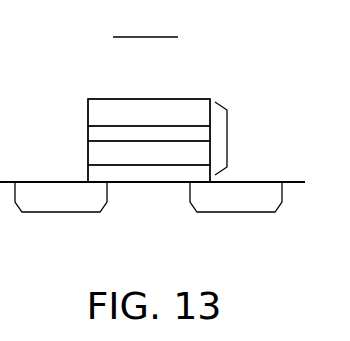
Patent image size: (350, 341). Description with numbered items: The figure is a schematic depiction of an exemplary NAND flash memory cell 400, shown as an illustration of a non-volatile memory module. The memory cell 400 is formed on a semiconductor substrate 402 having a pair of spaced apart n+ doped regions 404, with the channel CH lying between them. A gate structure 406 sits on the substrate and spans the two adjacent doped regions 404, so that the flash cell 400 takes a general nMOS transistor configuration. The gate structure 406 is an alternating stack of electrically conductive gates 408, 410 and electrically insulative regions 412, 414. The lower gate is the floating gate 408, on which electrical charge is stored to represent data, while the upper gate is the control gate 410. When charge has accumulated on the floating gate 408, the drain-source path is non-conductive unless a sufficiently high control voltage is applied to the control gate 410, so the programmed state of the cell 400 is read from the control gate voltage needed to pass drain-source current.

The NAND flash memory cell 400 is at (178, 69).
The semiconductor substrate 402 is at (235, 249).
The n+ doped regions 404 is at (40, 213).
The gate structure 406 is at (227, 139).
The floating gate 408 is at (88, 155).
The control gate 410 is at (88, 112).
The electrically insulative region 412 is at (88, 178).
The inter-gate dielectric layer 414 is at (88, 138).